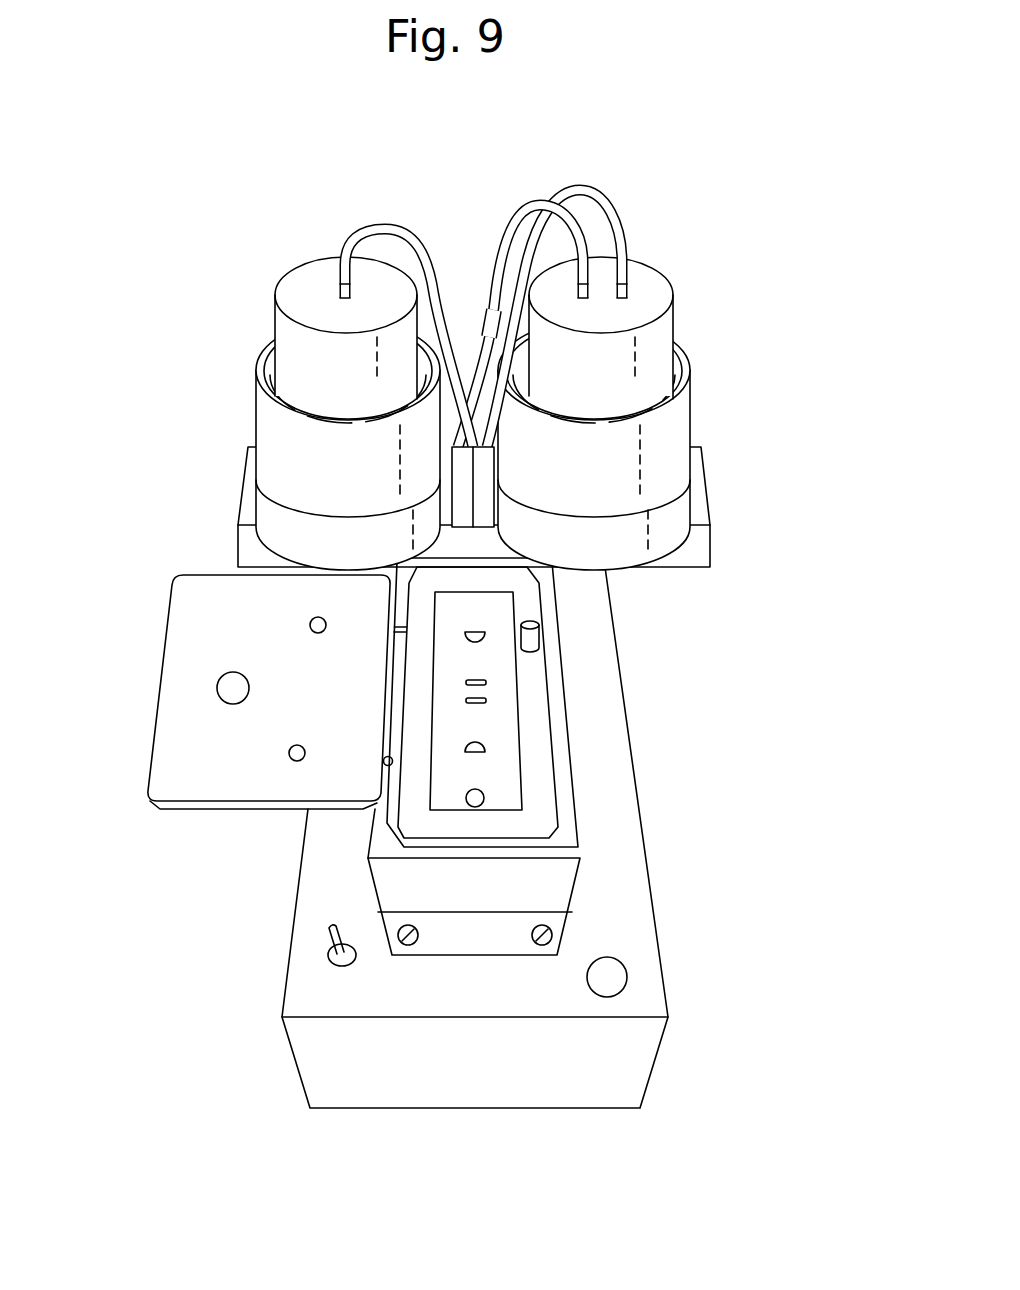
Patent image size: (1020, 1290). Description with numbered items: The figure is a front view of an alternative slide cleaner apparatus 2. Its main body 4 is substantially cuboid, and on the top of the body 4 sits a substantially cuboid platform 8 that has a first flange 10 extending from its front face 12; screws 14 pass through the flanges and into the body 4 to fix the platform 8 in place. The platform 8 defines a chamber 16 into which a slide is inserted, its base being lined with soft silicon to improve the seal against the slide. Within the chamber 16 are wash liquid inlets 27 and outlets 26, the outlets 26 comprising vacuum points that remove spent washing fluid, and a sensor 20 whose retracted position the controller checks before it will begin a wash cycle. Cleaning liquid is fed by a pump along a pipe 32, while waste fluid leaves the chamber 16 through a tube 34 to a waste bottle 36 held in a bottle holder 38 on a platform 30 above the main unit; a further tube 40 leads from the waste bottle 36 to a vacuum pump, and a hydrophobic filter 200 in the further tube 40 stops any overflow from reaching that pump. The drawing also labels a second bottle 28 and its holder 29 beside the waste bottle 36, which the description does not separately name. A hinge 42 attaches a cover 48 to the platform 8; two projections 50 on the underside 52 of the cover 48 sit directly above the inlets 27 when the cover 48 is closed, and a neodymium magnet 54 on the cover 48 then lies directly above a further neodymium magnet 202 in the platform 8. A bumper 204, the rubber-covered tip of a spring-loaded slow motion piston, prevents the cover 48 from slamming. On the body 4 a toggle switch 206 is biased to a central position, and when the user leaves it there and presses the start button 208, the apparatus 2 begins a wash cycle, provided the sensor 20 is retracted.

The slide cleaner apparatus 2 is at (242, 1107).
The main body 4 is at (655, 1067).
The platform 8 is at (578, 895).
The first flange 10 is at (468, 940).
The front face of the platform 12 is at (550, 880).
The screws 14 is at (555, 937).
The chamber 16 is at (503, 762).
The sensor 20 is at (487, 798).
The outlets 26 is at (482, 703).
The inlets 27 is at (480, 634).
The first container holder 28 is at (256, 400).
The first holder bracket 29 is at (260, 490).
The platform 30 is at (713, 540).
The pipe 32 is at (368, 226).
The tube 34 is at (603, 190).
The waste bottle 36 is at (692, 407).
The bottle holder 38 is at (693, 503).
The further tube 40 is at (537, 203).
The hinge 42 is at (388, 733).
The cover 48 is at (175, 662).
The projections 50 is at (310, 621).
The underside of the cover 52 is at (175, 612).
The neodymium magnet 54 is at (217, 688).
The hydrophobic filter 200 is at (483, 313).
The further neodymium magnet 202 is at (537, 687).
The bumper 204 is at (540, 640).
The toggle switch 206 is at (325, 957).
The start button 208 is at (628, 980).